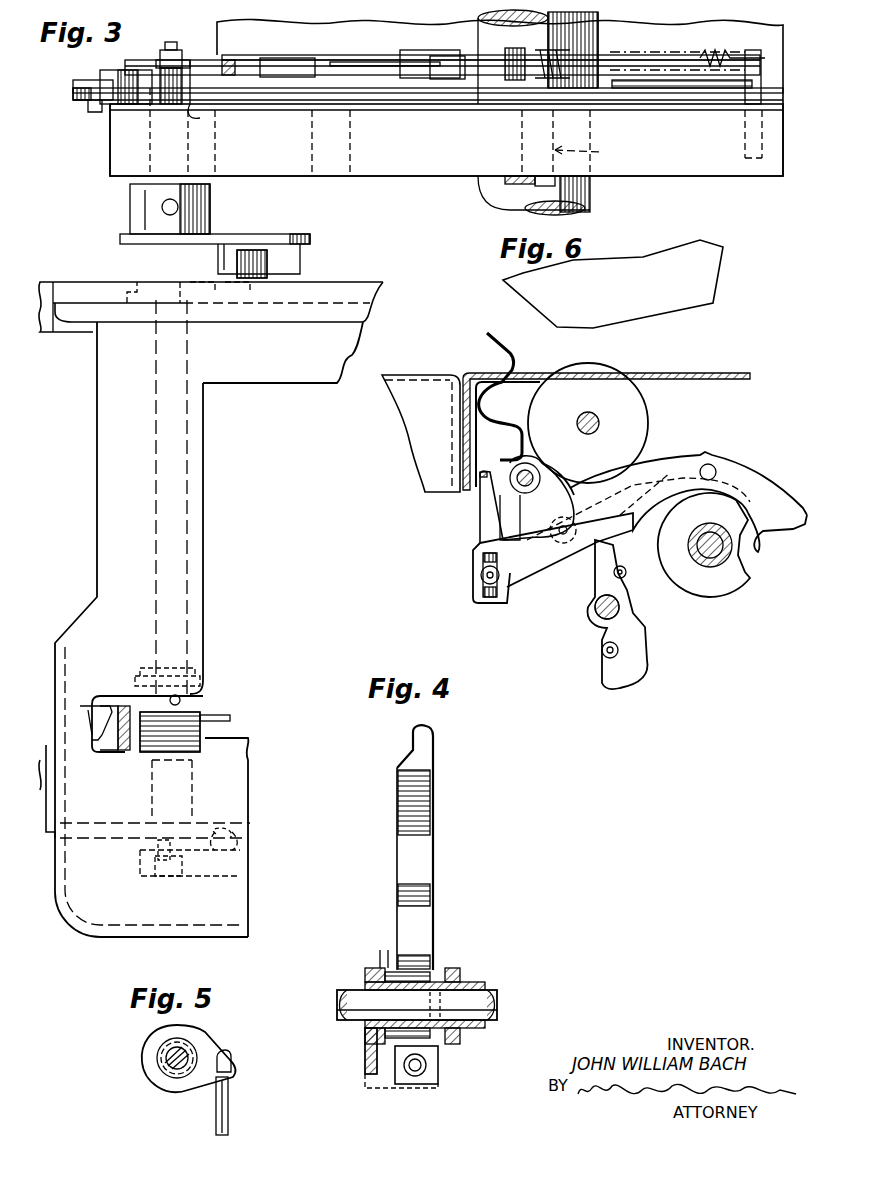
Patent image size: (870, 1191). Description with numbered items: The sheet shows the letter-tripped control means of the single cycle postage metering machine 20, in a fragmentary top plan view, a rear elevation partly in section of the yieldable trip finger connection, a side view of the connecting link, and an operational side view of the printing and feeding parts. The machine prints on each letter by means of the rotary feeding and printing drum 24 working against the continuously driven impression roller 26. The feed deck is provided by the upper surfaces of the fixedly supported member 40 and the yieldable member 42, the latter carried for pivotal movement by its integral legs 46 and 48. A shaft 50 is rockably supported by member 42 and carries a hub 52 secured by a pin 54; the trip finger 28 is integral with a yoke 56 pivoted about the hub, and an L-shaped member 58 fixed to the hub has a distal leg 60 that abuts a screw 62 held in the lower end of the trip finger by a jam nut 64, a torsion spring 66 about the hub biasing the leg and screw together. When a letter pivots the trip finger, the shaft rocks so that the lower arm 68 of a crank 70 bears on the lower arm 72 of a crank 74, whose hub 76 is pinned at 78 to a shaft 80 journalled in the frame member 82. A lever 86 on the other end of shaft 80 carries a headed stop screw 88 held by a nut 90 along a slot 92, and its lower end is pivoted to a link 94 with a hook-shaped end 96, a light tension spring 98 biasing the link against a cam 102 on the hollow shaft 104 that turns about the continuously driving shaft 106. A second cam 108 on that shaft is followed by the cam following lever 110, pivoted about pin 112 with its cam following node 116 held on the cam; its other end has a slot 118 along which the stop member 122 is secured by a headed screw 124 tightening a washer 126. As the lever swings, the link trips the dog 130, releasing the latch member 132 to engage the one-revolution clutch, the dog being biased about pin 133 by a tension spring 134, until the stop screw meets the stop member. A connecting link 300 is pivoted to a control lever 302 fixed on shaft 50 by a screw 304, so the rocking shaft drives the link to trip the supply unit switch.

In FIG. 3, the postage metering machine 20 is at (276, 412).
In FIG. 6, the feeding and printing drum 24 is at (716, 278).
In FIG. 6, the feeding and impression roller 26 is at (640, 428).
In FIG. 3, the trip finger 28 is at (104, 740).
In FIG. 6, the trip finger 28 is at (500, 352).
In FIG. 4, the trip finger 28 is at (420, 862).
In FIG. 6, the fixedly supported member 40 is at (408, 456).
In FIG. 6, the yieldable member 42 is at (714, 382).
In FIG. 3, the leg 46 is at (48, 745).
In FIG. 3, the leg 48 is at (62, 326).
In FIG. 3, the shaft 50 is at (196, 626).
In FIG. 4, the shaft 50 is at (480, 998).
In FIG. 3, the hub 52 is at (142, 700).
In FIG. 4, the hub 52 is at (474, 982).
In FIG. 3, the pin 54 is at (172, 700).
In FIG. 4, the pin 54 is at (440, 975).
In FIG. 3, the yoke 56 is at (125, 692).
In FIG. 4, the yoke 56 is at (380, 960).
In FIG. 6, the L-shaped member 58 is at (538, 486).
In FIG. 4, the L-shaped member 58 is at (365, 1068).
In FIG. 4, the distal leg 60 is at (386, 1086).
In FIG. 4, the screw 62 is at (416, 1076).
In FIG. 4, the jam nut 64 is at (426, 1082).
In FIG. 3, the torsion spring 66 is at (215, 735).
In FIG. 3, the lower arm 68 is at (268, 262).
In FIG. 3, the crank 70 is at (203, 286).
In FIG. 3, the lower arm 72 is at (300, 250).
In FIG. 3, the crank 74 is at (226, 236).
In FIG. 3, the hub 76 is at (130, 211).
In FIG. 3, the pin 78 is at (167, 215).
In FIG. 3, the shaft 80 is at (142, 154).
In FIG. 3, the frame member 82 is at (270, 176).
In FIG. 3, the lever 86 is at (225, 98).
In FIG. 6, the lever 86 is at (572, 490).
In FIG. 3, the headed stop screw 88 is at (172, 42).
In FIG. 6, the headed stop screw 88 is at (550, 530).
In FIG. 3, the nut 90 is at (160, 53).
In FIG. 3, the slot 92 is at (206, 62).
In FIG. 3, the link 94 is at (328, 60).
In FIG. 6, the link 94 is at (680, 458).
In FIG. 6, the hook-shaped end 96 is at (760, 476).
In FIG. 3, the light tension spring 98 is at (720, 52).
In FIG. 3, the cam 102 is at (458, 54).
In FIG. 6, the hollow shaft 104 is at (688, 547).
In FIG. 6, the continuously driving shaft 106 is at (690, 566).
In FIG. 3, the cam 108 is at (472, 100).
In FIG. 6, the cam 108 is at (727, 590).
In FIG. 3, the cam following lever 110 is at (394, 97).
In FIG. 6, the cam following lever 110 is at (800, 506).
In FIG. 3, the pin 112 is at (594, 155).
In FIG. 6, the cam following node 116 is at (758, 552).
In FIG. 6, the slot 118 is at (490, 604).
In FIG. 6, the stop member 122 is at (480, 536).
In FIG. 6, the headed screw 124 is at (482, 586).
In FIG. 6, the washer 126 is at (480, 576).
In FIG. 6, the dog 130 is at (598, 572).
In FIG. 6, the latch member 132 is at (602, 654).
In FIG. 6, the pin 133 is at (596, 615).
In FIG. 3, the tension spring 134 is at (412, 60).
In FIG. 3, the connecting link 300 is at (226, 840).
In FIG. 5, the connecting link 300 is at (216, 1125).
In FIG. 3, the control lever 302 is at (205, 870).
In FIG. 5, the control lever 302 is at (206, 1050).
In FIG. 3, the screw 304 is at (160, 878).
In FIG. 5, the screw 304 is at (160, 1054).